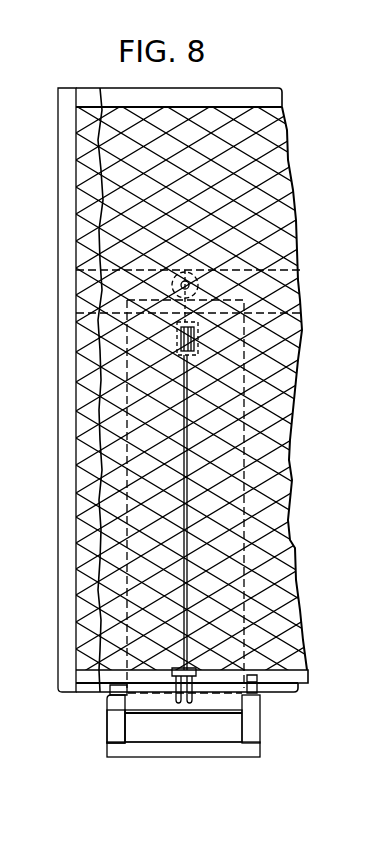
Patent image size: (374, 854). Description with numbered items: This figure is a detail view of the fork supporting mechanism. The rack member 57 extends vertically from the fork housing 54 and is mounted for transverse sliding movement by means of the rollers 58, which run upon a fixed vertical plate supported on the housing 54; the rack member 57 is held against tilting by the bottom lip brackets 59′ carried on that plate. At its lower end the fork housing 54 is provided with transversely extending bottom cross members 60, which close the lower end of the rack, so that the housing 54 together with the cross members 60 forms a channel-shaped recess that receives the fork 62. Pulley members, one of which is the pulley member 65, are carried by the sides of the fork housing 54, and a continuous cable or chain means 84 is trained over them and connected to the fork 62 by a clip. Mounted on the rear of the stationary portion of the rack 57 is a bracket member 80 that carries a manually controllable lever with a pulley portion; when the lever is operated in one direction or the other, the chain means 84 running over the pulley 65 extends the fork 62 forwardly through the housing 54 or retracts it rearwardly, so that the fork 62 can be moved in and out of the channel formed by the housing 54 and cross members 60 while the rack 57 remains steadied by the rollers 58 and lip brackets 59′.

The rack member 57 is at (68, 173).
The rollers 58 is at (300, 227).
The bracket member 80 is at (128, 344).
The cable or chain means 84 is at (184, 545).
The bottom lip brackets 59′ is at (228, 702).
The pulley member 65 is at (122, 701).
The fork housing 54 is at (118, 724).
The fork 62 is at (150, 728).
The bottom cross members 60 is at (185, 747).